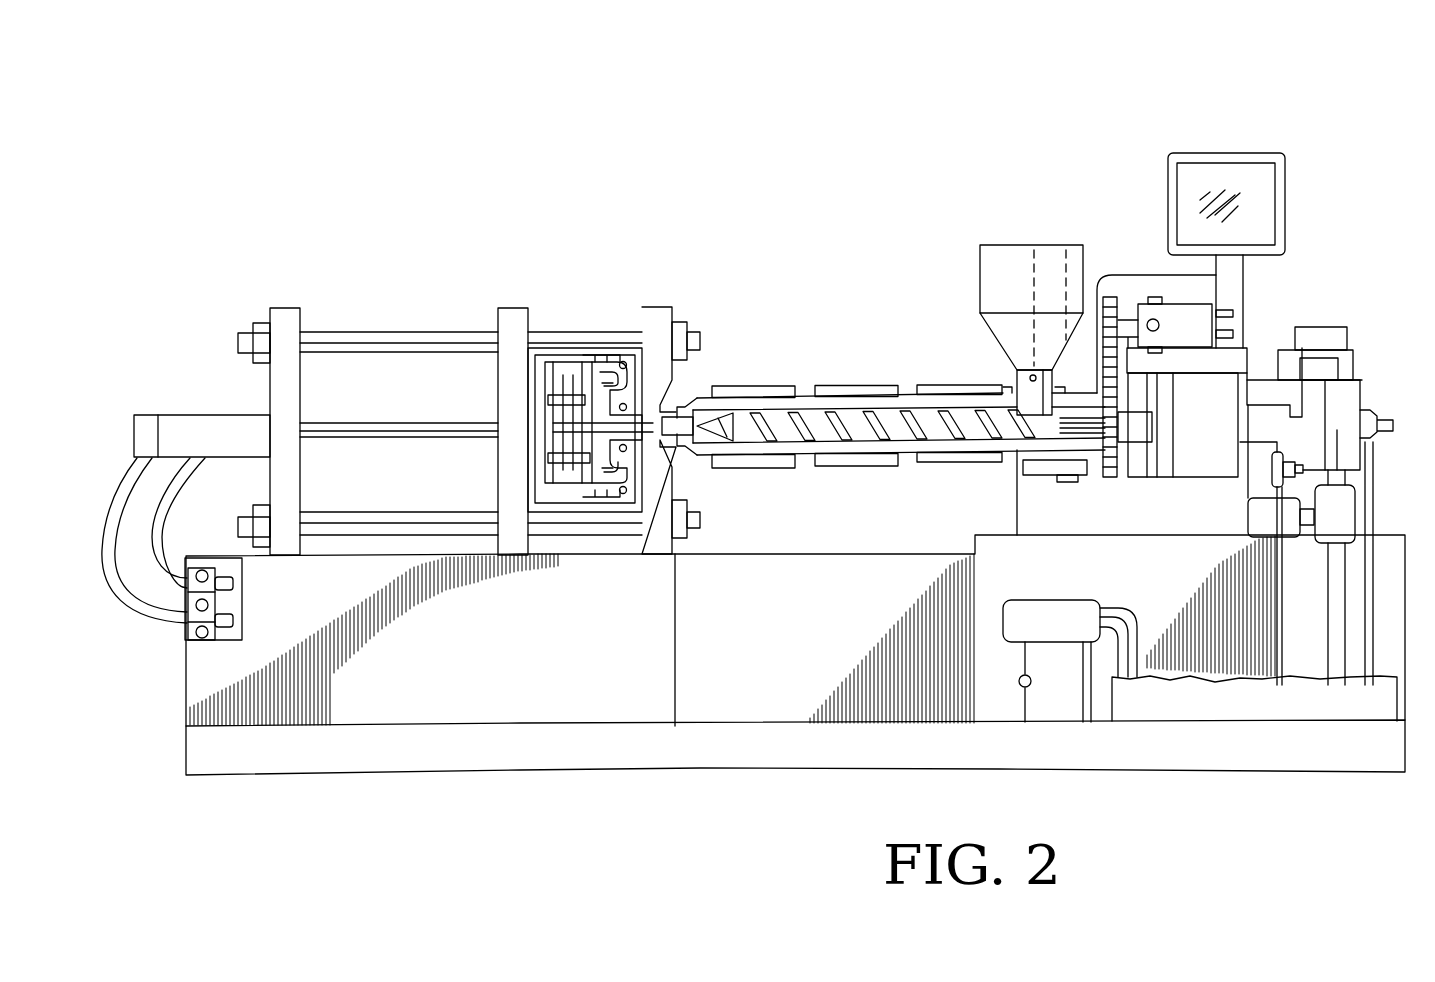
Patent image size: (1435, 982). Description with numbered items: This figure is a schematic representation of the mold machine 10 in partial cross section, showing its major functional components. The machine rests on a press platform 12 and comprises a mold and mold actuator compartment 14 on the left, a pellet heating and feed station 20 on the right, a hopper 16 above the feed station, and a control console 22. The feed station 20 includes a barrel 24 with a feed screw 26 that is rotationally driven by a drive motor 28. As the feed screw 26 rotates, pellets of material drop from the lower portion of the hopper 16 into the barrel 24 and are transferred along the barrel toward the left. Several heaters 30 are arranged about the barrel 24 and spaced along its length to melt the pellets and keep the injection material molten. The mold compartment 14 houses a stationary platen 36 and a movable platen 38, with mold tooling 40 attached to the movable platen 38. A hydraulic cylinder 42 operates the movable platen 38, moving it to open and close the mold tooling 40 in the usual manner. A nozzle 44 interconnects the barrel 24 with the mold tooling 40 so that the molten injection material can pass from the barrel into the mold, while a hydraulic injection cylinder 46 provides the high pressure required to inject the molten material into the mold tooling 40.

The mold machine 10 is at (777, 228).
The press platform 12 is at (344, 773).
The mold and mold actuator compartment 14 is at (402, 275).
The hopper 16 is at (1005, 245).
The pellet heating and feed station 20 is at (902, 278).
The control console 22 is at (1210, 152).
The barrel 24 is at (805, 405).
The feed screw 26 is at (893, 420).
The drive motor 28 is at (1177, 317).
The heaters 30 is at (770, 383).
The stationary platen 36 is at (656, 310).
The movable platen 38 is at (512, 310).
The mold tooling 40 is at (573, 348).
The hydraulic cylinder 42 is at (181, 425).
The nozzle 44 is at (670, 415).
The hydraulic injection cylinder 46 is at (1225, 388).